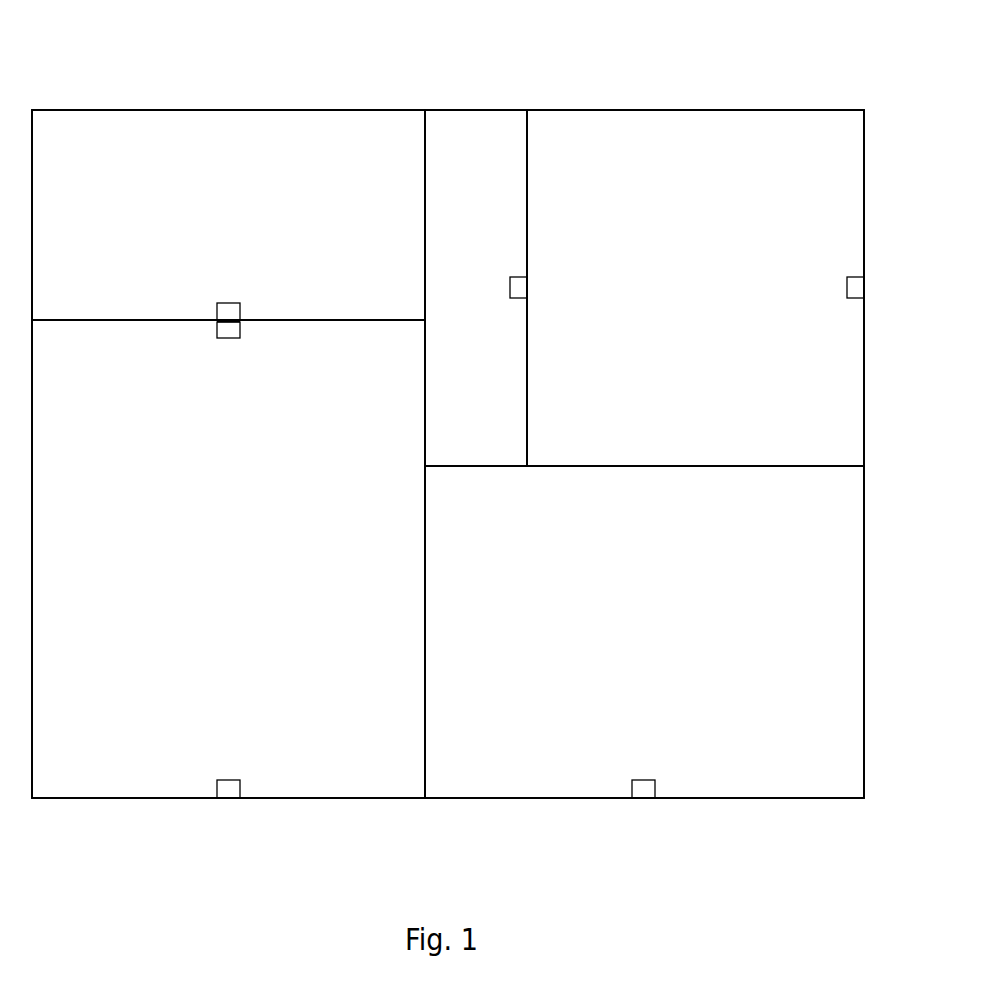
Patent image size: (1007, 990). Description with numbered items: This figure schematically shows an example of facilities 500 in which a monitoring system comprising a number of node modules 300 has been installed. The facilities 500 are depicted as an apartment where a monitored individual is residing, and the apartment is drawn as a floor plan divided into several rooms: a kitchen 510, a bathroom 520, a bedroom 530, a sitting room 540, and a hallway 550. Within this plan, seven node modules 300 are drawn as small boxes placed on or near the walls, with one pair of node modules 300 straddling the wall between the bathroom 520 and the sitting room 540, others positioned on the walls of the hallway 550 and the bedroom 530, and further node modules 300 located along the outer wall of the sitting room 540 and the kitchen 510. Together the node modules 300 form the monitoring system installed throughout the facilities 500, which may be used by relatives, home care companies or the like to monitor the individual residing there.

The facilities 500 is at (105, 110).
The kitchen 510 is at (510, 526).
The bathroom 520 is at (110, 171).
The bedroom 530 is at (616, 171).
The sitting room 540 is at (113, 388).
The hallway 550 is at (498, 171).
The node module 300 is at (228, 303).